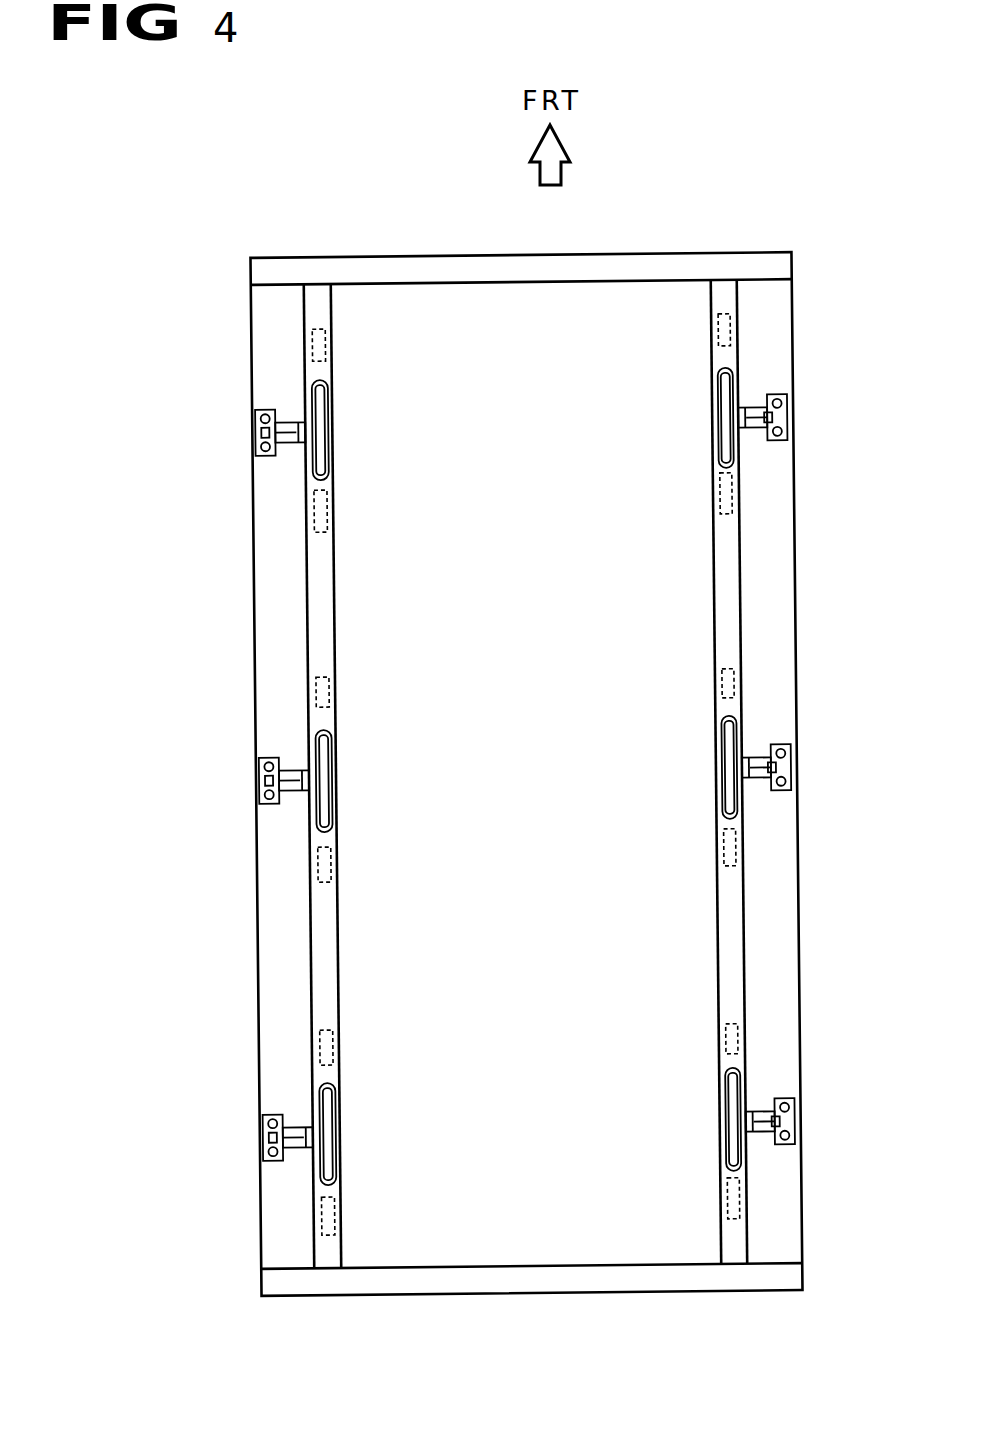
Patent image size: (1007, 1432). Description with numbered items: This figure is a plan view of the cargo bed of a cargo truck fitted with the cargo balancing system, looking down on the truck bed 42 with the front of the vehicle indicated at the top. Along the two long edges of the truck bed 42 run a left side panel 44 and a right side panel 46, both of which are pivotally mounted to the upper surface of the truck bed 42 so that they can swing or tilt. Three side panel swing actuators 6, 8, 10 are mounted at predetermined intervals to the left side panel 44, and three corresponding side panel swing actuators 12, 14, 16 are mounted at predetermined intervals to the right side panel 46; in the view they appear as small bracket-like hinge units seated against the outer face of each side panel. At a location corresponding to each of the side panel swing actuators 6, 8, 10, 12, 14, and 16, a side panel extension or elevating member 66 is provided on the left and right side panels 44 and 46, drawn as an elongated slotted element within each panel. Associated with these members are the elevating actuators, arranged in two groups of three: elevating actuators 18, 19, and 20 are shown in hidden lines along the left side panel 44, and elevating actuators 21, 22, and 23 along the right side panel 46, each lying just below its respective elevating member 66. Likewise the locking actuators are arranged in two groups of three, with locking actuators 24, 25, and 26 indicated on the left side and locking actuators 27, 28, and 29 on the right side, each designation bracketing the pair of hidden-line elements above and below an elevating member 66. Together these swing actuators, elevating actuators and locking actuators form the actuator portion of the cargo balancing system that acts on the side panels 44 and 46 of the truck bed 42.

The side panel swing actuator 6 is at (291, 412).
The side panel swing actuator 8 is at (262, 801).
The side panel swing actuator 10 is at (291, 1137).
The side panel swing actuator 12 is at (754, 414).
The side panel swing actuator 14 is at (752, 764).
The side panel swing actuator 16 is at (751, 1117).
The elevating actuator 18 is at (321, 488).
The elevating actuator 19 is at (321, 838).
The elevating actuator 20 is at (326, 1188).
The elevating actuator 21 is at (732, 482).
The elevating actuator 22 is at (732, 832).
The elevating actuator 23 is at (736, 1185).
The locking actuator 24 is at (330, 503).
The locking actuator 25 is at (331, 853).
The locking actuator 26 is at (335, 1208).
The locking actuator 27 is at (722, 1209).
The locking actuator 28 is at (717, 852).
The locking actuator 29 is at (720, 505).
The truck bed 42 is at (380, 946).
The left side panel 44 is at (322, 586).
The right side panel 46 is at (728, 937).
The side panel elevating member 66 is at (321, 443).